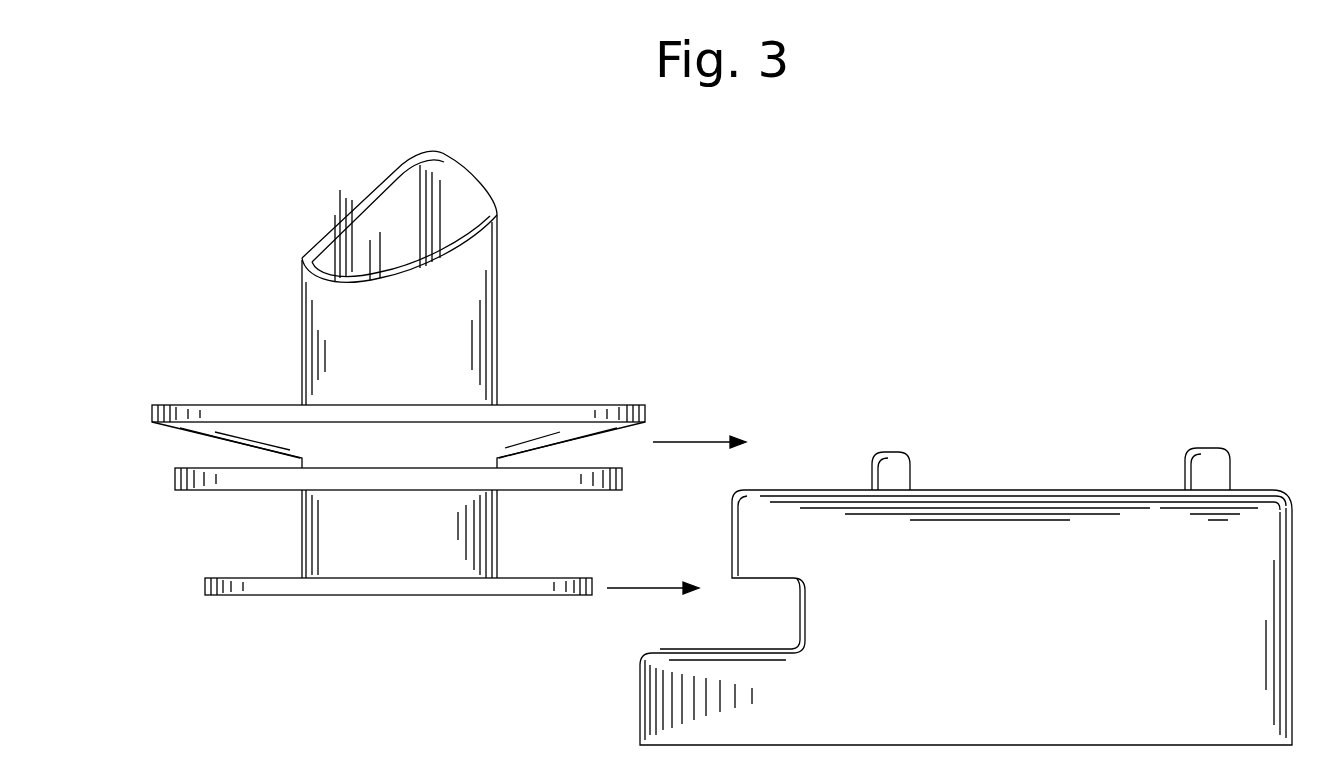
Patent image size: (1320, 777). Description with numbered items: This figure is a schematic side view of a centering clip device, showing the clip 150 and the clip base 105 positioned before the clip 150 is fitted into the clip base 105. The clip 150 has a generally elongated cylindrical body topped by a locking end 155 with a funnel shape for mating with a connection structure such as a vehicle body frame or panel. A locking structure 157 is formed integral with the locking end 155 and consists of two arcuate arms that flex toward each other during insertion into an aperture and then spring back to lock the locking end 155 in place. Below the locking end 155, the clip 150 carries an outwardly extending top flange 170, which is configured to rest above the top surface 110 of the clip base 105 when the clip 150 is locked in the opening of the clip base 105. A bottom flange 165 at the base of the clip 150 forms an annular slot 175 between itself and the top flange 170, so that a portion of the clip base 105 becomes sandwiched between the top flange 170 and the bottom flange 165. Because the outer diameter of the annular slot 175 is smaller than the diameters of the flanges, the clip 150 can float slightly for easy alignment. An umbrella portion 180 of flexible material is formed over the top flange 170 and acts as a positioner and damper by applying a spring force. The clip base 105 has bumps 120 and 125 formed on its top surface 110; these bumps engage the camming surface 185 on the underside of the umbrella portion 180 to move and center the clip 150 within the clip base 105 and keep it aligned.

The clip 150 is at (204, 204).
The locking end 155 is at (356, 196).
The locking structure 157 is at (470, 216).
The umbrella portion 180 is at (190, 404).
The camming surface 185 is at (187, 428).
The top flange 170 is at (175, 482).
The annular slot 175 is at (300, 535).
The bottom flange 165 is at (205, 588).
The clip base 105 is at (1155, 380).
The top surface 110 is at (1037, 488).
The bump 120 is at (893, 450).
The bump 125 is at (1205, 448).